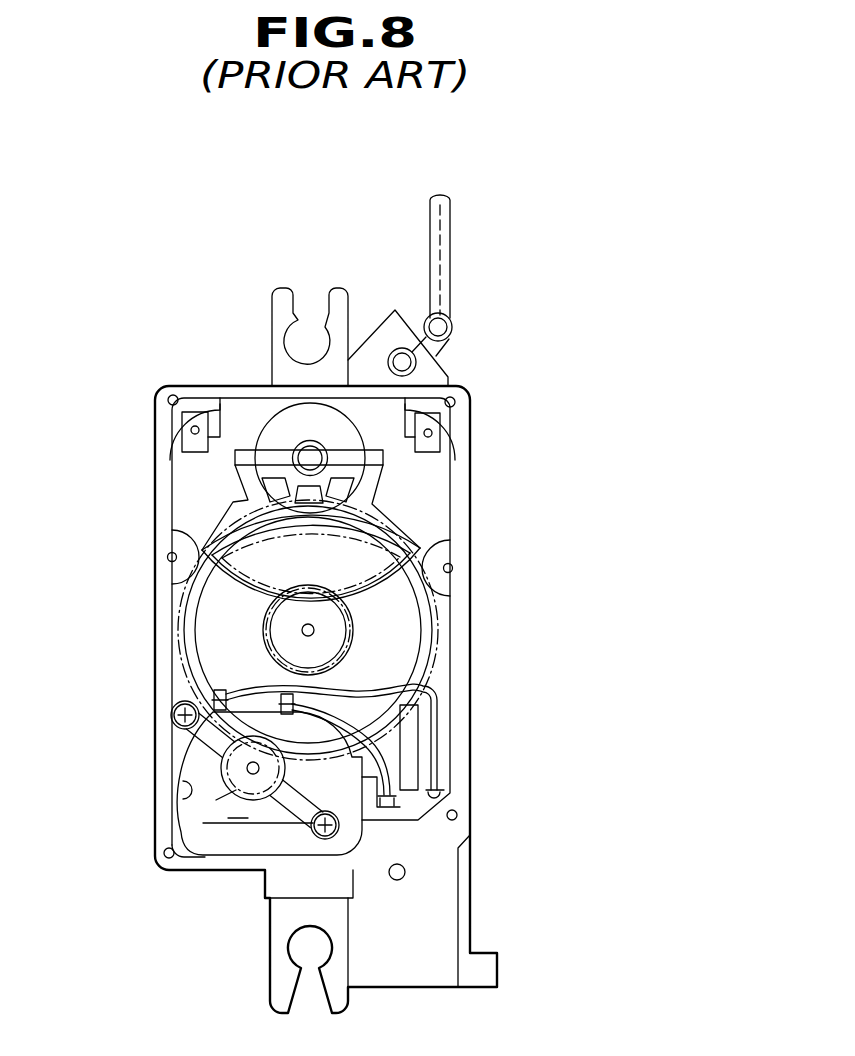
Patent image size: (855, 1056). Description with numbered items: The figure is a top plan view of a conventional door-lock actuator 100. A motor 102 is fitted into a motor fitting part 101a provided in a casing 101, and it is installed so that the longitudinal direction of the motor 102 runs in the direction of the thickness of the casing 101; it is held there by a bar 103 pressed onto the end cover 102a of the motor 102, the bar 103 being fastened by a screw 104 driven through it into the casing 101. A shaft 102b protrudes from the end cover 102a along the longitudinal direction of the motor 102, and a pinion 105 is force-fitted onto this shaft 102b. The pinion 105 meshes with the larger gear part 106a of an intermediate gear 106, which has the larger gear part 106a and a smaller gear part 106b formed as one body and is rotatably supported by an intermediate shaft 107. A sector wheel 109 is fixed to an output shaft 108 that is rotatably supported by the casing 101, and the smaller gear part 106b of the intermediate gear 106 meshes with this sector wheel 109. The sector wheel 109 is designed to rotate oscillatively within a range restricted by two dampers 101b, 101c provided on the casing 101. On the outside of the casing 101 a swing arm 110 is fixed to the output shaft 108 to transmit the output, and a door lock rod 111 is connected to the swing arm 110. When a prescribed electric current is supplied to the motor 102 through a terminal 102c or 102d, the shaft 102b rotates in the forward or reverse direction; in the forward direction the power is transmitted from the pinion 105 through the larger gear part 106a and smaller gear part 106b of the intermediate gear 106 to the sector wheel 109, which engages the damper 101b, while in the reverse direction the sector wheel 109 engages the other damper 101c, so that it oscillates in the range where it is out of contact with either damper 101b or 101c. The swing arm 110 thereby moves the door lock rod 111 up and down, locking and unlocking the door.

The actuator 100 is at (482, 392).
The casing 101 is at (457, 416).
The motor fitting part 101a is at (197, 788).
The damper 101b is at (447, 465).
The damper 101c is at (187, 455).
The motor 102 is at (182, 752).
The end cover 102a is at (236, 845).
The shaft 102b is at (218, 822).
The terminal 102c is at (214, 700).
The terminal 102d is at (281, 700).
The bar 103 is at (258, 805).
The screw 104 is at (176, 710).
The pinion 105 is at (180, 733).
The intermediate gear 106 is at (432, 634).
The larger gear part 106a is at (430, 648).
The smaller gear part 106b is at (372, 668).
The intermediate shaft 107 is at (316, 630).
The output shaft 108 is at (299, 448).
The sector wheel 109 is at (225, 523).
The swing arm 110 is at (388, 326).
The door lock rod 111 is at (447, 242).